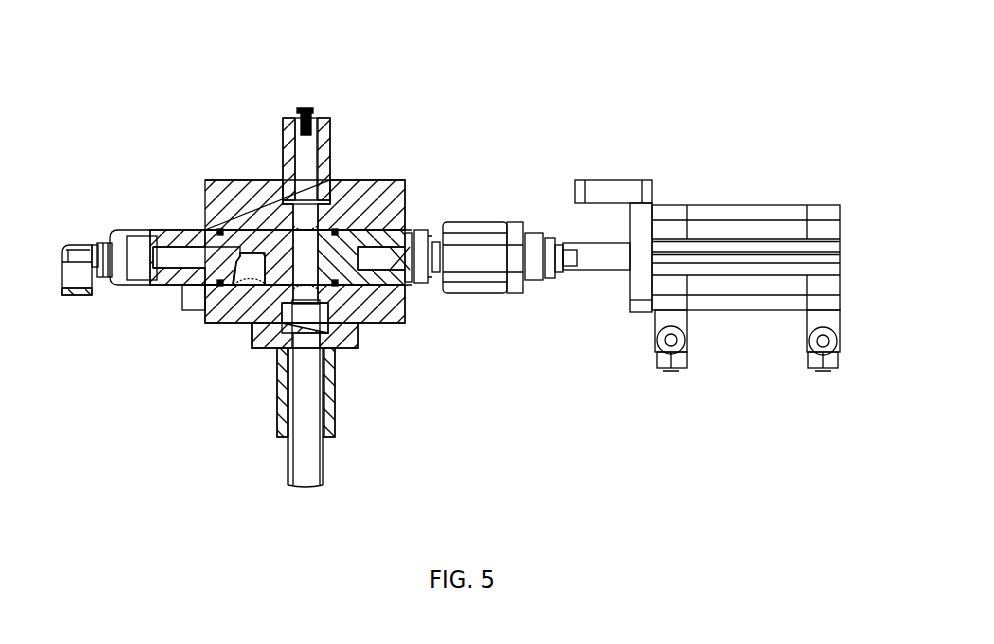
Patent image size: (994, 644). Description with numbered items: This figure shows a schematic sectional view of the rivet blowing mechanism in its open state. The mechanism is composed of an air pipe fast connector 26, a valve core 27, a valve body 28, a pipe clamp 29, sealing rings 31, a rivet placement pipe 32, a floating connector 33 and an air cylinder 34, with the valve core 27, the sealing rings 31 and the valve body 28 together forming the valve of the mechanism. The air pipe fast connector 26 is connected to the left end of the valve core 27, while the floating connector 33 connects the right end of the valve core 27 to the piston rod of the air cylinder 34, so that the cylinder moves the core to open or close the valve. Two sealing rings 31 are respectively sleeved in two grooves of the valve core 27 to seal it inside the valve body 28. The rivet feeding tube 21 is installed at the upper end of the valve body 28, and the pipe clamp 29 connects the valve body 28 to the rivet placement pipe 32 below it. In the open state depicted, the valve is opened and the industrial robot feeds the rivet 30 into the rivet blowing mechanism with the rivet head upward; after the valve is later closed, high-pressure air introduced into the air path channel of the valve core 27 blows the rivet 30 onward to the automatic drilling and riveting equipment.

The rivet feeding tube 21 is at (286, 116).
The air pipe fast connector 26 is at (77, 275).
The valve core 27 is at (175, 237).
The valve body 28 is at (235, 207).
The pipe clamp 29 is at (281, 343).
The rivet 30 is at (313, 110).
The sealing rings 31 is at (335, 236).
The rivet placement pipe 32 is at (401, 240).
The floating connector 33 is at (472, 262).
The air cylinder 34 is at (672, 257).